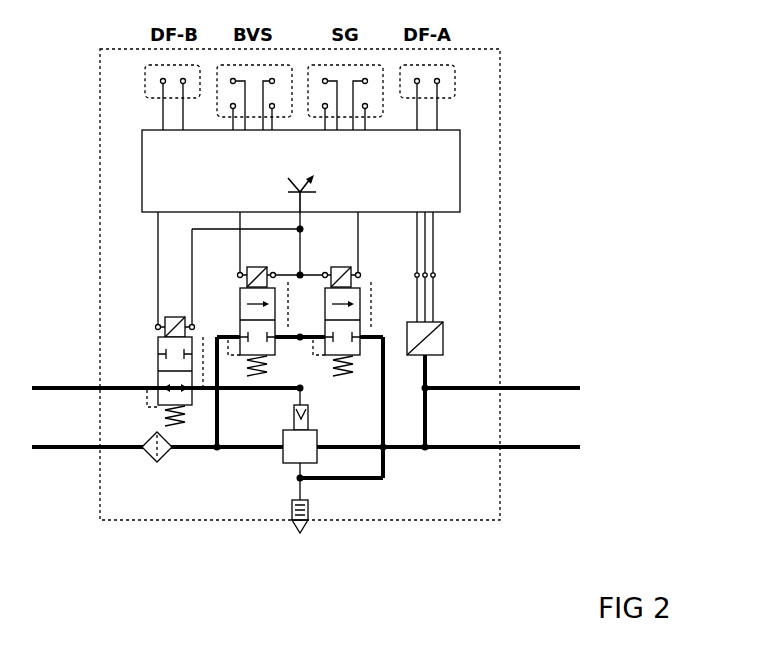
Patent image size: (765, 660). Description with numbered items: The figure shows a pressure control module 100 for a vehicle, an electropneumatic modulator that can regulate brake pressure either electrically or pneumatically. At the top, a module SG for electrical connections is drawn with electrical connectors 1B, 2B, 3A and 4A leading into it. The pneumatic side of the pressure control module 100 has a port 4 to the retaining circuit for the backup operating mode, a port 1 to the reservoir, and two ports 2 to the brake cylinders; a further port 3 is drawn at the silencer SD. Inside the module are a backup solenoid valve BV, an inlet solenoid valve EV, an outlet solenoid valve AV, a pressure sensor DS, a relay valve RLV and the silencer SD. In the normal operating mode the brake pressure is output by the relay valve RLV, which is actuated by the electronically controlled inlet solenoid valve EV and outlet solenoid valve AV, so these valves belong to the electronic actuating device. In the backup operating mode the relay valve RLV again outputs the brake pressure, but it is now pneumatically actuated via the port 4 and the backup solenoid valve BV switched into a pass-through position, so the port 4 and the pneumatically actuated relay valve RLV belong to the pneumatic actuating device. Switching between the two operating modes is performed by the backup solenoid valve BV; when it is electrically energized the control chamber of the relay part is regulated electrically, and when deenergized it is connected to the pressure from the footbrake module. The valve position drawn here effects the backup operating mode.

The pressure control module 100 is at (625, 66).
The port to the reservoir 1 is at (306, 443).
The ports to brake cylinders 2 is at (502, 421).
The vent outlet port 3 is at (316, 528).
The port to the retaining circuit 4 is at (168, 378).
The connector 1B is at (172, 97).
The connector 2B is at (254, 97).
The connector 3A is at (345, 97).
The connector 4A is at (427, 97).
The module for electrical connections SG is at (301, 171).
The backup solenoid valve BV is at (175, 363).
The inlet solenoid valve EV is at (258, 313).
The outlet solenoid valve AV is at (342, 313).
The pressure sensor DS is at (442, 381).
The relay valve RLV is at (279, 444).
The silencer SD is at (316, 516).